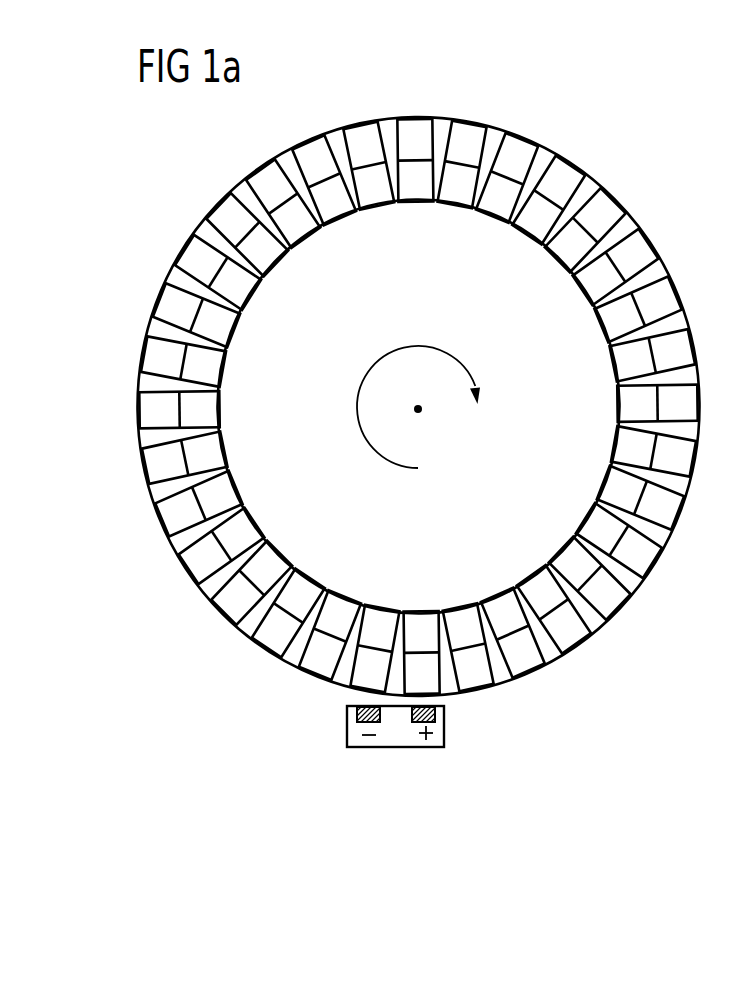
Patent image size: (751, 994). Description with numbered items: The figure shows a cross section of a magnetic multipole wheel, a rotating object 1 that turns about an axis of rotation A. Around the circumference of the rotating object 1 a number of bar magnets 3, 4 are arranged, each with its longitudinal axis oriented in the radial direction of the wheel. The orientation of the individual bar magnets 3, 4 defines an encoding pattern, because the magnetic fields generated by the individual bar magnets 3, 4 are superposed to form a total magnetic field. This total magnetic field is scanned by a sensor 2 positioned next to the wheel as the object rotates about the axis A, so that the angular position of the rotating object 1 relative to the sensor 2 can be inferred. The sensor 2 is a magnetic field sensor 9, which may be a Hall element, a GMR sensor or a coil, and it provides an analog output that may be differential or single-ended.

The rotating object 1 is at (652, 139).
The sensor 2 is at (397, 747).
The bar magnet 3 is at (677, 293).
The bar magnet 4 is at (306, 146).
The magnetic field sensor 9 is at (446, 727).
The axis of rotation A is at (423, 412).